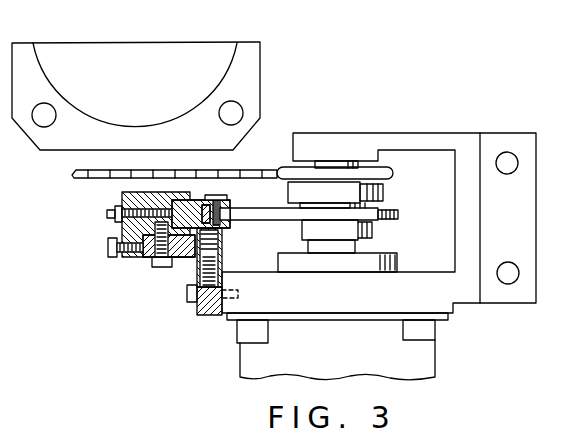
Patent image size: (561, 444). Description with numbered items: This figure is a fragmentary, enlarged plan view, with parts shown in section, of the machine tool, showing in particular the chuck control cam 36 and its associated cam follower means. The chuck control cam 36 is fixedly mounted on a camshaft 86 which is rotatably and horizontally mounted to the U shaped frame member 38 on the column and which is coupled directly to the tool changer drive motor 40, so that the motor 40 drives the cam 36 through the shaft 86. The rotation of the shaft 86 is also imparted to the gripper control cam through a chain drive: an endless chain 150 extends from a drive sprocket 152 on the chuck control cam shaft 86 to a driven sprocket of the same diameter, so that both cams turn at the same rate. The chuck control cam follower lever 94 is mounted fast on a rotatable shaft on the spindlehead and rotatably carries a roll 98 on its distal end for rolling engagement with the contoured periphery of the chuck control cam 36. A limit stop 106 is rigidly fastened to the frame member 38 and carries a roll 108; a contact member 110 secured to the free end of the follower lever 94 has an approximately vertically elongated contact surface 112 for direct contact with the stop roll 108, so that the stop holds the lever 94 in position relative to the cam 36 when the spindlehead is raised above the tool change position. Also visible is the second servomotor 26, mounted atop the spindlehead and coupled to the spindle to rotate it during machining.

The second servomotor 26 is at (135, 52).
The endless chain 150 is at (88, 178).
The drive sprocket 152 is at (395, 173).
The U shaped frame member 38 is at (340, 143).
The chuck control cam 36 is at (399, 214).
The camshaft 86 is at (331, 247).
The chuck control cam follower lever 94 is at (122, 230).
The contact member 110 is at (145, 258).
The contact surface 112 is at (197, 258).
The roll 98 is at (230, 207).
The roll 108 is at (225, 241).
The limit stop 106 is at (207, 310).
The tool changer drive motor 40 is at (434, 357).